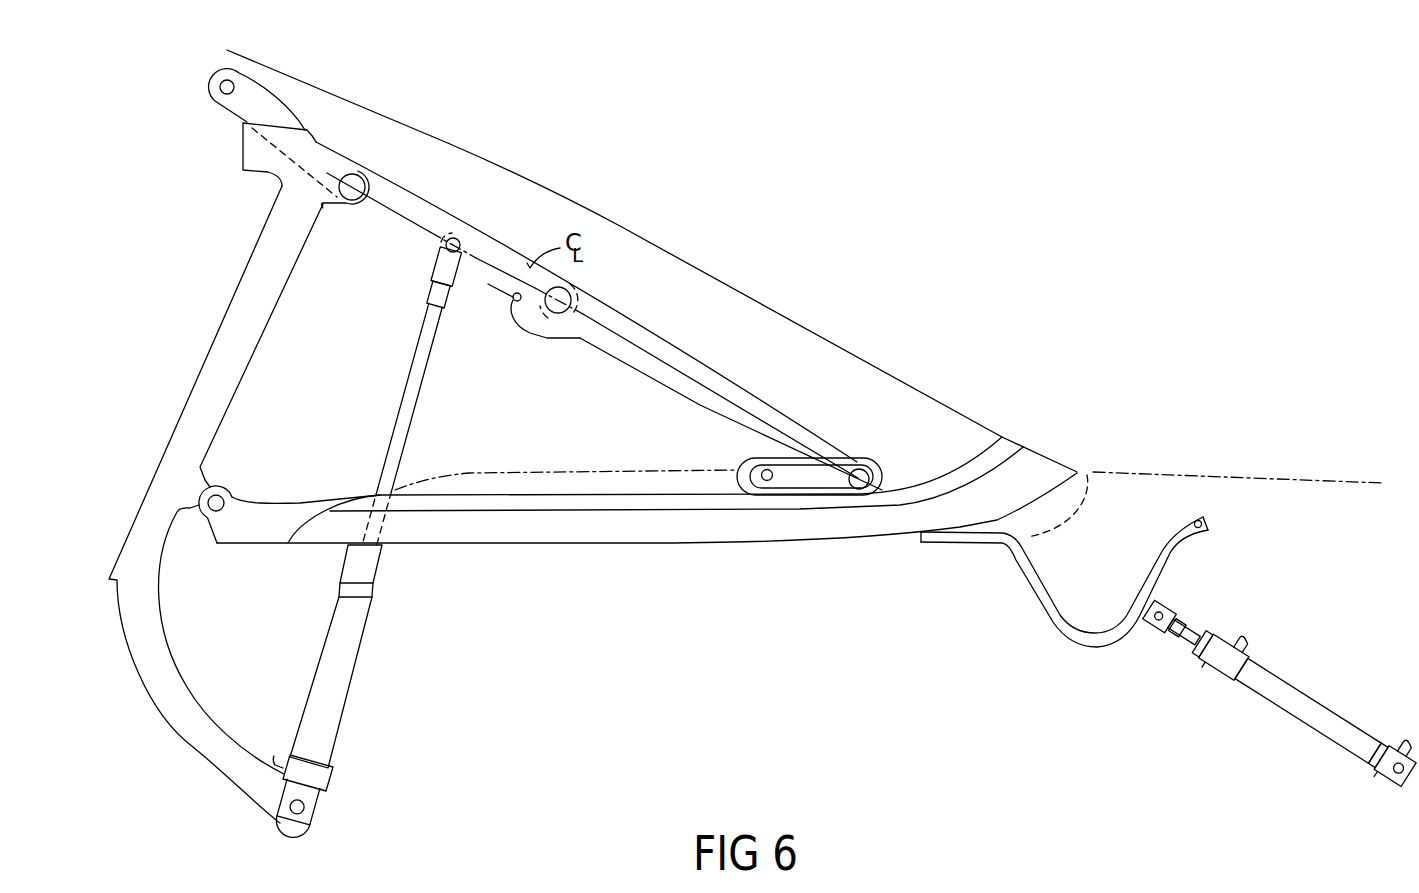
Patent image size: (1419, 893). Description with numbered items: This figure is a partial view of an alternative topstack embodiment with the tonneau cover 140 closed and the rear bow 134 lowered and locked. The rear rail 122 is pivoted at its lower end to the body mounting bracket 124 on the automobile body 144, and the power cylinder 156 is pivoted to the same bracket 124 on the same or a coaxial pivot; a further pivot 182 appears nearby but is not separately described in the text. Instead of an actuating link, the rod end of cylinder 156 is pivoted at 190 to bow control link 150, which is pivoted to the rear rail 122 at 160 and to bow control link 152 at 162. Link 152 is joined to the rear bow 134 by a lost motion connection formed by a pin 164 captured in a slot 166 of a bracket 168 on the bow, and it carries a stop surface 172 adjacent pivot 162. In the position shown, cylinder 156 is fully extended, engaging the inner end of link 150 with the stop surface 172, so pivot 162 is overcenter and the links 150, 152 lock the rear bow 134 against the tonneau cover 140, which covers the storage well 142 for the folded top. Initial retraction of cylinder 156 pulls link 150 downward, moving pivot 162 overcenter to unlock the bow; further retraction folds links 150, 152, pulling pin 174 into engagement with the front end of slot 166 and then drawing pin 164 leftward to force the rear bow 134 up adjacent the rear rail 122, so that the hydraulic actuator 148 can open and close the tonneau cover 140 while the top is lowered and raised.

The rear rail 122 is at (222, 345).
The body mounting bracket 124 is at (330, 775).
The rear bow 134 is at (817, 530).
The tonneau cover 140 is at (1085, 471).
The storage well 142 is at (668, 676).
The automobile body 144 is at (1290, 460).
The hydraulic actuator 148 is at (1293, 700).
The bow control link 150 is at (420, 205).
The bow control link 152 is at (732, 390).
The power cylinder 156 is at (347, 643).
The pivot 160 is at (347, 180).
The pivot 162 is at (571, 298).
The pin 164 is at (863, 460).
The slot 166 is at (757, 474).
The bracket 168 is at (886, 470).
The stop surface 172 is at (512, 303).
The pin 174 is at (306, 807).
The pivot 182 is at (221, 500).
The pivot 190 is at (462, 244).